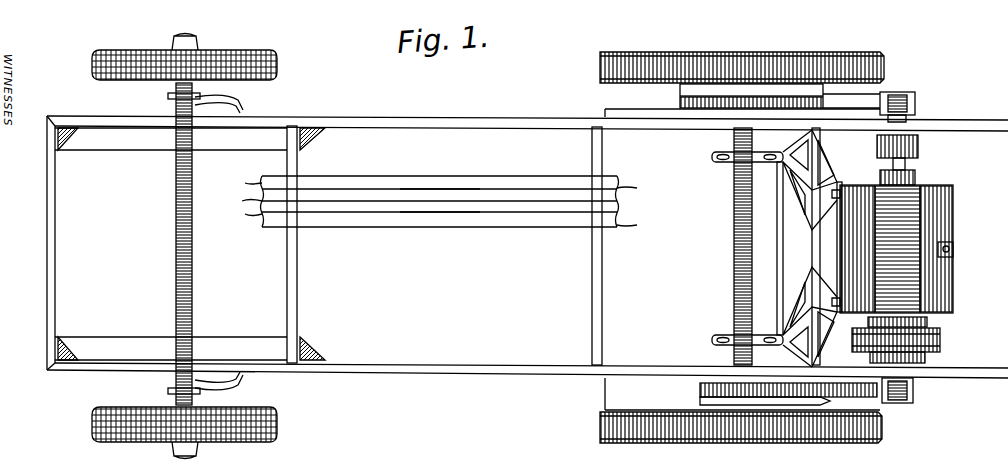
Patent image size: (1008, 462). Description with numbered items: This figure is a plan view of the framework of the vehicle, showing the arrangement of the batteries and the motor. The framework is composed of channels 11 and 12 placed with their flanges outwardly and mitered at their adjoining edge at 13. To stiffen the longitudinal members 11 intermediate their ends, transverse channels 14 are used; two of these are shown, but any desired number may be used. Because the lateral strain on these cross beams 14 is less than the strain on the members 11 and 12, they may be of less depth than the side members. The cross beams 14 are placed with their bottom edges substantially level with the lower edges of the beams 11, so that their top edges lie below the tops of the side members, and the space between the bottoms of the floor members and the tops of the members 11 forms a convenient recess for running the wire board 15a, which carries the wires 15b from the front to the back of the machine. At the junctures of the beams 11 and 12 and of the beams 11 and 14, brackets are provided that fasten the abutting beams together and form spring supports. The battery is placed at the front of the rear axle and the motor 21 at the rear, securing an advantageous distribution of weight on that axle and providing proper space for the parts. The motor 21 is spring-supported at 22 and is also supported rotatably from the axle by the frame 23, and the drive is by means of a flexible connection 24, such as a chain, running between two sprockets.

The longitudinal channel 11 is at (398, 367).
The channel 12 is at (50, 263).
The mitered edge 13 is at (47, 369).
The transverse channel 14 is at (290, 265).
The wire board 15a is at (393, 218).
The wires 15b is at (475, 188).
The motor 21 is at (896, 249).
The spring support 22 is at (953, 251).
The frame 23 is at (788, 253).
The flexible connection 24 is at (843, 392).